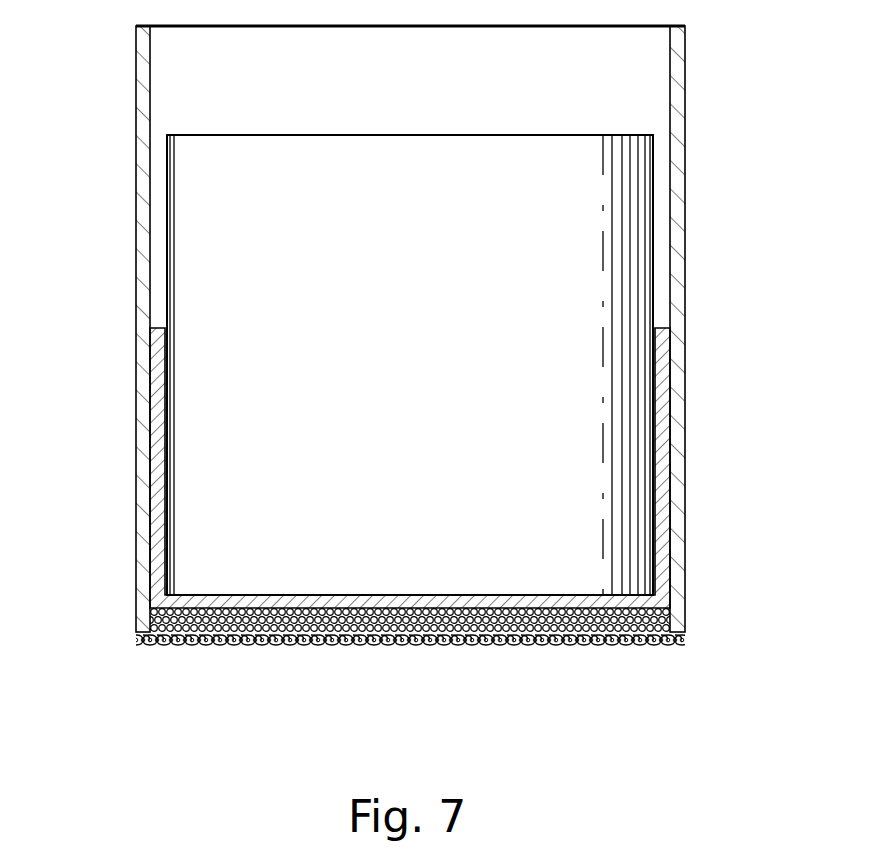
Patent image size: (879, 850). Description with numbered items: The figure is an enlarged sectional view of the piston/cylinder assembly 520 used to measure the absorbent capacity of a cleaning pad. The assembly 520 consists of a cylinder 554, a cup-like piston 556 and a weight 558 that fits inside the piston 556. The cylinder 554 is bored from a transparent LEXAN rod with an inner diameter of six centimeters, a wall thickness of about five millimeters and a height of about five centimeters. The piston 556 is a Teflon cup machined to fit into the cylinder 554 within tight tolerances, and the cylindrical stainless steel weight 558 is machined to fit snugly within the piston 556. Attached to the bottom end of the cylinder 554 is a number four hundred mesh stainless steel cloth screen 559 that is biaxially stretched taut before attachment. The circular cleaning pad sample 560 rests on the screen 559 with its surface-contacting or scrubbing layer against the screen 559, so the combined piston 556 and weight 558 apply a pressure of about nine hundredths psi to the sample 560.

The assembly 520 is at (703, 222).
The cylinder 554 is at (138, 522).
The cup-like piston 556 is at (157, 412).
The weight 558 is at (428, 328).
The mesh stainless steel cloth screen 559 is at (286, 646).
The cleaning pad sample 560 is at (457, 628).